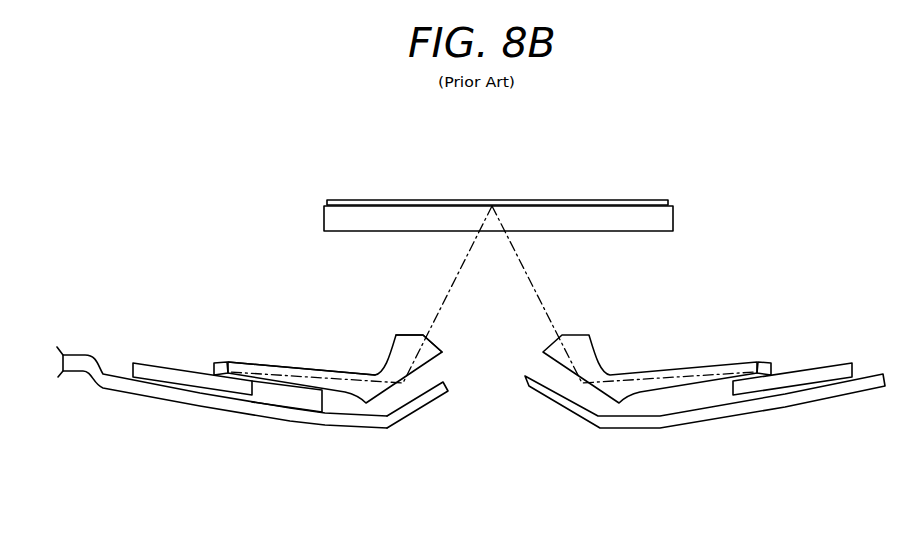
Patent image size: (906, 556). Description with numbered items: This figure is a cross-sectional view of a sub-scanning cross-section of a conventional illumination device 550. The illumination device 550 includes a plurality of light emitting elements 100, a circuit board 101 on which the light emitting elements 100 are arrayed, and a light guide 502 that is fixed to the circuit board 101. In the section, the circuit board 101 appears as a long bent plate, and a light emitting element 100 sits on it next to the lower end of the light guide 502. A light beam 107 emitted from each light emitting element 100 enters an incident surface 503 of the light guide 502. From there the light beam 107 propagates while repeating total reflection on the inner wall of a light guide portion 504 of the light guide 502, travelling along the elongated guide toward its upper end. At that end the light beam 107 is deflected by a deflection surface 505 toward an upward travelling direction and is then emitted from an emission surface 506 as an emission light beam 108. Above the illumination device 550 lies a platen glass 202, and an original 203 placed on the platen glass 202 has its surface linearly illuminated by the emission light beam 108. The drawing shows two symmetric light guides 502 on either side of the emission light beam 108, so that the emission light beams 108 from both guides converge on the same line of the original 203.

The illumination device 550 is at (250, 180).
The original 203 is at (463, 200).
The platen glass 202 is at (625, 218).
The emission light beam 108 is at (451, 283).
The circuit board 101 is at (152, 363).
The light emitting element 100 is at (213, 363).
The incident surface 503 is at (218, 362).
The light beam 107 is at (292, 368).
The light guide 502 is at (344, 371).
The emission surface 506 is at (433, 340).
The deflection surface 505 is at (422, 380).
The light guide portion 504 is at (318, 392).